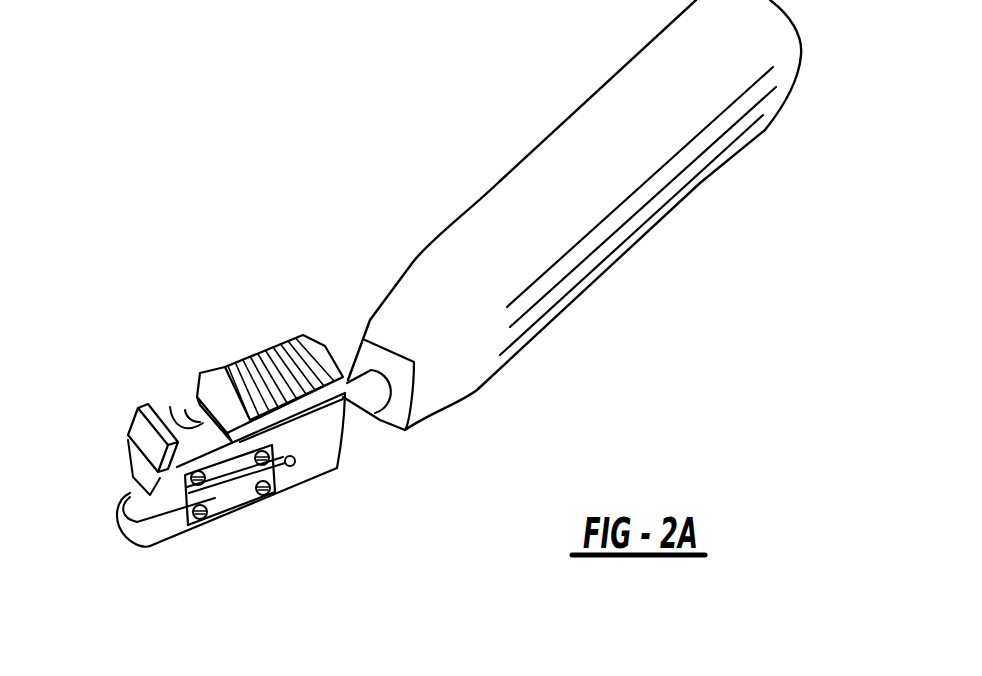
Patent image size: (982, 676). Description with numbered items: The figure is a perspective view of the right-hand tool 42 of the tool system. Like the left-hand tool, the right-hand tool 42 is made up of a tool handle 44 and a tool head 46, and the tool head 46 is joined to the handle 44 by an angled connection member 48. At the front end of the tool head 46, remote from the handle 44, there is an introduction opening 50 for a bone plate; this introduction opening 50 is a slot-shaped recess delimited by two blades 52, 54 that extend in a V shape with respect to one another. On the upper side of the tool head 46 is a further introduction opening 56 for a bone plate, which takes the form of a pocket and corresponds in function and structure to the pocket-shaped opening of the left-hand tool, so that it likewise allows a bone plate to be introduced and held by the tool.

The right-hand tool 42 is at (385, 183).
The tool handle 44 is at (625, 120).
The tool head 46 is at (320, 428).
The angled connection member 48 is at (370, 390).
The introduction opening 50 is at (128, 494).
The blade 52 is at (232, 490).
The blade 54 is at (183, 480).
The further introduction opening 56 is at (163, 407).